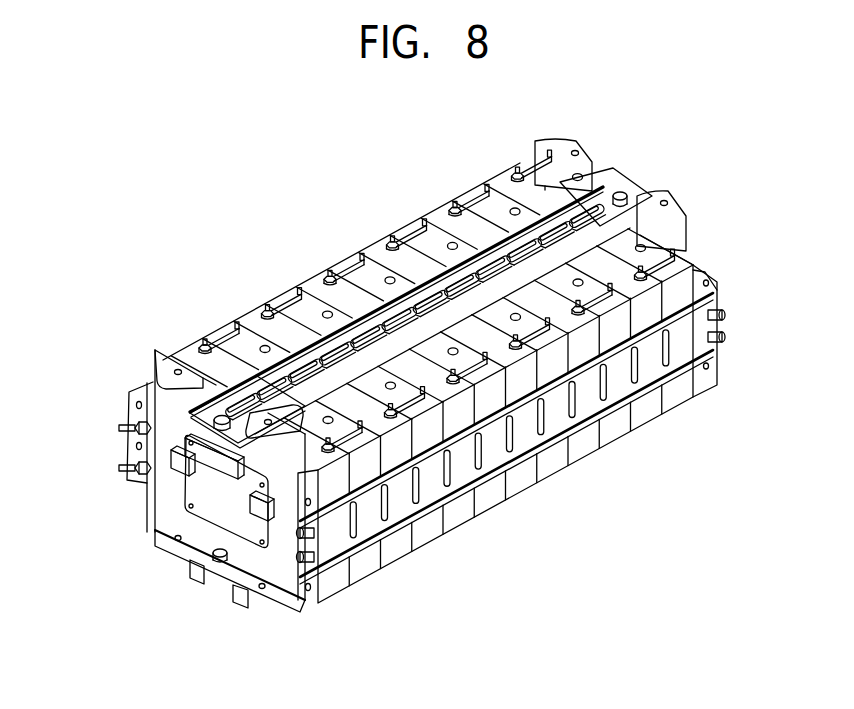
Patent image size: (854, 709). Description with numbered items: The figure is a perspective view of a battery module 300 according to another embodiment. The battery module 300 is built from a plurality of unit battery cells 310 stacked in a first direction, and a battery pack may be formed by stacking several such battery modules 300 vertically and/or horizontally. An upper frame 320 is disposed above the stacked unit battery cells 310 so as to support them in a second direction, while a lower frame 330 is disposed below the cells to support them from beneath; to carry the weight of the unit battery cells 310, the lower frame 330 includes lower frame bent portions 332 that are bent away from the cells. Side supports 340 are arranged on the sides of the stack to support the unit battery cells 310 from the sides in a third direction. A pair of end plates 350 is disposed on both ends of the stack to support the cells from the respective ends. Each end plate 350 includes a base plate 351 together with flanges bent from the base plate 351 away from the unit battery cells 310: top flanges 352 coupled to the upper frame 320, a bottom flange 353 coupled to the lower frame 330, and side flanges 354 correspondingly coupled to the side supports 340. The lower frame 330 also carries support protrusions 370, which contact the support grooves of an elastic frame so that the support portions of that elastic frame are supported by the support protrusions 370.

The battery module 300 is at (688, 146).
The unit battery cells 310 is at (615, 430).
The upper frame 320 is at (601, 204).
The lower frame 330 is at (268, 608).
The lower frame bent portions 332 is at (249, 604).
The side supports 340 is at (649, 372).
The end plates 350 is at (198, 531).
The base plate 351 is at (160, 456).
The top flanges 352 is at (170, 350).
The bottom flange 353 is at (158, 528).
The side flanges 354 is at (135, 428).
The support protrusions 370 is at (215, 572).